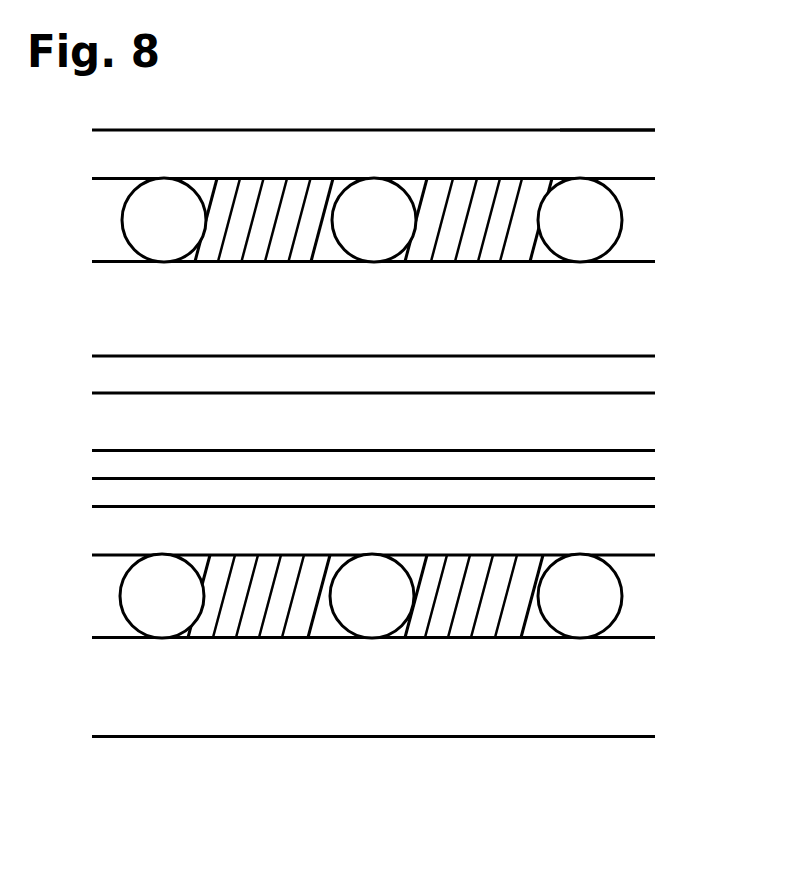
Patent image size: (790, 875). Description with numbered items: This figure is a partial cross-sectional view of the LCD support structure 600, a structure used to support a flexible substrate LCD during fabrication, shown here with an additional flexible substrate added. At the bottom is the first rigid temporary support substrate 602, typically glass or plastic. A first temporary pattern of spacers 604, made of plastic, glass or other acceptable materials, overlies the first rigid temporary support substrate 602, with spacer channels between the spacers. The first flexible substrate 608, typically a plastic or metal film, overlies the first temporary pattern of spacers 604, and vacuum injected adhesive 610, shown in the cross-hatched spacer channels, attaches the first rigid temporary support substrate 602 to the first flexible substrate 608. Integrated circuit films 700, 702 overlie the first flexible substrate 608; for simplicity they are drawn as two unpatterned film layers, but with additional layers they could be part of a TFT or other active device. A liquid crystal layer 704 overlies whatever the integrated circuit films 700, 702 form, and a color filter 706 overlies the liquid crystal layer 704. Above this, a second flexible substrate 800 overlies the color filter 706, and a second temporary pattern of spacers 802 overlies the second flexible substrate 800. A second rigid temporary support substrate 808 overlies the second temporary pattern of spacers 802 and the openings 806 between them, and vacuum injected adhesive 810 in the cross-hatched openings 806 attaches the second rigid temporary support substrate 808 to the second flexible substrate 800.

The LCD support structure 600 is at (585, 102).
The first rigid temporary support substrate 602 is at (345, 699).
The first temporary pattern of spacers 604 is at (137, 609).
The first flexible substrate 608 is at (349, 543).
The vacuum injected adhesive 610 is at (240, 610).
The integrated circuit film 700 is at (645, 498).
The integrated circuit film 702 is at (647, 470).
The liquid crystal layer 704 is at (349, 433).
The color filter 706 is at (349, 389).
The second flexible substrate 800 is at (349, 320).
The second temporary pattern of spacers 802 is at (140, 230).
The openings 806 is at (261, 166).
The second rigid temporary support substrate 808 is at (349, 166).
The vacuum injected adhesive 810 is at (240, 230).